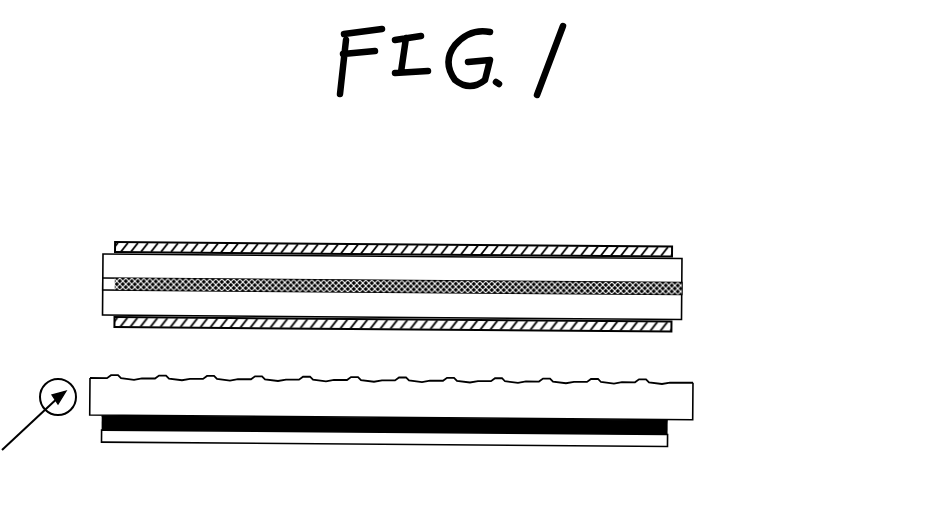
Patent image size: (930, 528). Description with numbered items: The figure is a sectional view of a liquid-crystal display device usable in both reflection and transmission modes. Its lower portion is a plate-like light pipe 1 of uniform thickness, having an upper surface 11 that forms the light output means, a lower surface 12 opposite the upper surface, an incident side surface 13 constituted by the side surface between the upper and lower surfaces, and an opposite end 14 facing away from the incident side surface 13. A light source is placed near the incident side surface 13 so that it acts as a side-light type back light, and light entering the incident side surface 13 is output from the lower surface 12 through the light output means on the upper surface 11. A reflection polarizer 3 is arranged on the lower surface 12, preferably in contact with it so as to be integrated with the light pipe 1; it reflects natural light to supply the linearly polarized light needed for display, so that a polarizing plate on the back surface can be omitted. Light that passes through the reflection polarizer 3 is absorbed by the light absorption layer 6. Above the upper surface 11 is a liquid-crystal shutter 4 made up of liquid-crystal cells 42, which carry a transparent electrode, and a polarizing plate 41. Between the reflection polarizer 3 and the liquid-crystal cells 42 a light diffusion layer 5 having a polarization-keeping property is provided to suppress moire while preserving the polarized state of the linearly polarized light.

The light pipe 1 is at (438, 425).
The reflection polarizer 3 is at (669, 431).
The liquid-crystal shutter 4 is at (459, 282).
The light diffusion layer 5 is at (435, 347).
The light absorption layer 6 is at (552, 443).
The upper surface 11 is at (473, 382).
The lower surface 12 is at (692, 421).
The incident side surface 13 is at (88, 410).
The opposite end 14 is at (693, 403).
The polarizing plate 41 is at (665, 242).
The liquid-crystal cells 42 is at (682, 263).